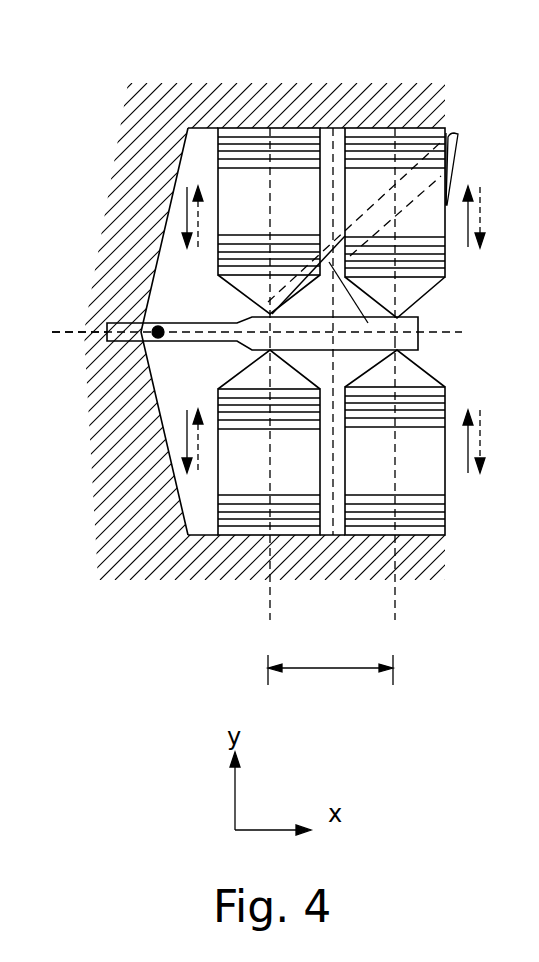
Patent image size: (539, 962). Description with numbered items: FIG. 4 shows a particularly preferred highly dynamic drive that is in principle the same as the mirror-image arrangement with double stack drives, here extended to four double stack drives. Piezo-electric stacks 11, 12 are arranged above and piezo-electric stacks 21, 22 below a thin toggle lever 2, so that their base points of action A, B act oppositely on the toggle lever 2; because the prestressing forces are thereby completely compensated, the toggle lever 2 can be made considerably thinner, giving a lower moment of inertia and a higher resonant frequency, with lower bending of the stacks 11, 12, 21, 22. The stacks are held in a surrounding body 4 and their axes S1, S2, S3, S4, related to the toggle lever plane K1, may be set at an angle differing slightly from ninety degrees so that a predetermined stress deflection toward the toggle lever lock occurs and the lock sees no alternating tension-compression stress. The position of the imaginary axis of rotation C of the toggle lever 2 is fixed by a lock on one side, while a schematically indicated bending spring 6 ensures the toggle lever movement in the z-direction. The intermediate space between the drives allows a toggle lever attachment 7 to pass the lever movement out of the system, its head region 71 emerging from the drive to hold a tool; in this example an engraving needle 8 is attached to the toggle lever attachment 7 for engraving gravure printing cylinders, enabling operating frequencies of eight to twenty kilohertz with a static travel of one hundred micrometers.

The toggle lever 2 is at (413, 342).
The housing / guide body 4 is at (437, 93).
The bending spring 6 is at (113, 343).
The toggle lever attachment 7 is at (368, 323).
The engraving needle 8 is at (462, 140).
The head region 71 is at (488, 166).
The piezo-electric stack 11 is at (288, 217).
The piezo-electric stack 12 is at (413, 217).
The piezo-electric stack 21 is at (284, 482).
The piezo-electric stack 22 is at (414, 482).
The axis of rotation C is at (333, 333).
The toggle lever plane K1 is at (63, 330).
The axis of piezo-electric stack S1 is at (272, 140).
The axis of piezo-electric stack S2 is at (393, 140).
The axis of piezo-electric stack S3 is at (266, 520).
The axis of piezo-electric stack S4 is at (390, 523).
The base point of action A is at (244, 666).
The base point of action B is at (412, 666).